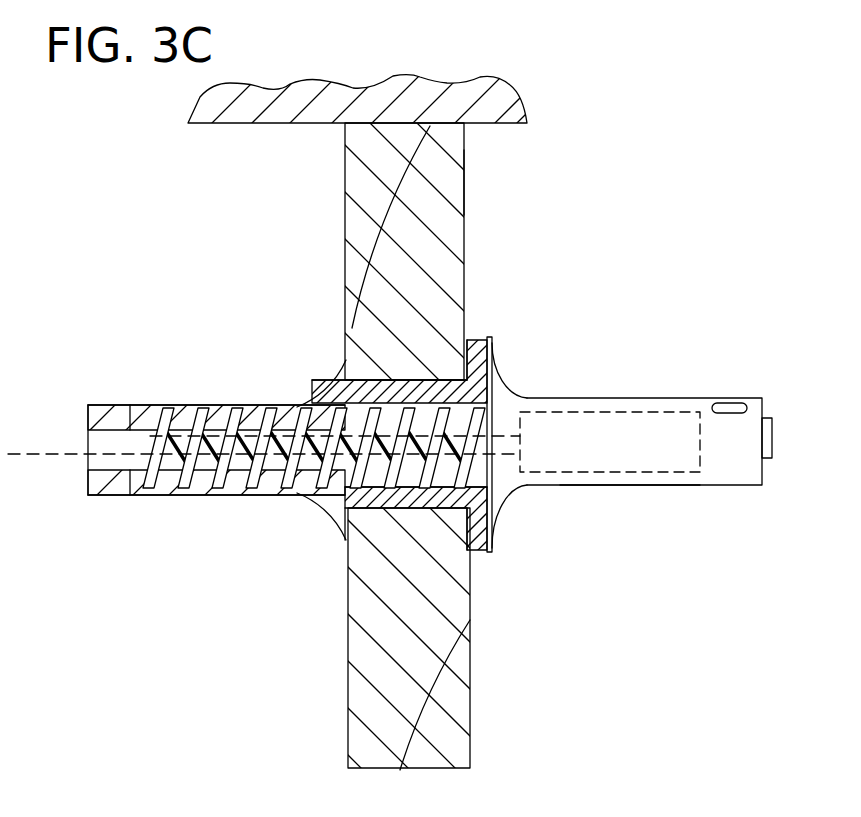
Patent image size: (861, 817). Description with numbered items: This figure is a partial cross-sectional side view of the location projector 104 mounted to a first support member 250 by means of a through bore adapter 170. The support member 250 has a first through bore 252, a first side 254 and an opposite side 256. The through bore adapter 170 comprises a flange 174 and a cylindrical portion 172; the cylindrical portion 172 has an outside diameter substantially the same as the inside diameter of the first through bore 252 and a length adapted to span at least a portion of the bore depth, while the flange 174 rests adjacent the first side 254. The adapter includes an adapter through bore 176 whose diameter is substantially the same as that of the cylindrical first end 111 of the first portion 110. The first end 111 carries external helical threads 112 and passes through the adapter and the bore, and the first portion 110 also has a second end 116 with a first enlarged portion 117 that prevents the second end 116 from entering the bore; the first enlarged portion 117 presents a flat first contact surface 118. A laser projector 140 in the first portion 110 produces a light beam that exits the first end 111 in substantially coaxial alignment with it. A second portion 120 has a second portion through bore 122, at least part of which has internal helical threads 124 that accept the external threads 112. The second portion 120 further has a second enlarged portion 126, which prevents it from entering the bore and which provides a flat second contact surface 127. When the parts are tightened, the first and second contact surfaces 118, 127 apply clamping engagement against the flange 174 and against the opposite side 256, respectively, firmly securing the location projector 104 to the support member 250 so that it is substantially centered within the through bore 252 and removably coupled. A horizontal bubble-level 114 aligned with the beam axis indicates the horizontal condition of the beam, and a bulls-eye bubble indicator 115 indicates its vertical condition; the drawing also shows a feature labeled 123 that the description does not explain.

The location projector 104 is at (612, 313).
The first portion 110 is at (649, 453).
The cylindrical first end 111 is at (253, 497).
The external helical threads 112 is at (421, 488).
The horizontal bubble-level 114 is at (728, 408).
The bulls-eye bubble indicator 115 is at (773, 440).
The second end 116 is at (612, 487).
The first enlarged portion 117 is at (498, 500).
The first contact surface 118 is at (468, 342).
The second portion 120 is at (214, 428).
The second portion through bore 122 is at (120, 430).
The tube lower wall 123 is at (146, 490).
The internal helical threads 124 is at (220, 412).
The second enlarged portion 126 is at (340, 507).
The second contact surface 127 is at (350, 522).
The laser projector 140 is at (680, 472).
The through bore adapter 170 is at (436, 368).
The cylindrical portion 172 is at (313, 503).
The flange 174 is at (470, 556).
The adapter through bore 176 is at (340, 395).
The first support member 250 is at (353, 210).
The first through bore 252 is at (392, 380).
The first side 254 is at (464, 182).
The opposite side 256 is at (343, 165).